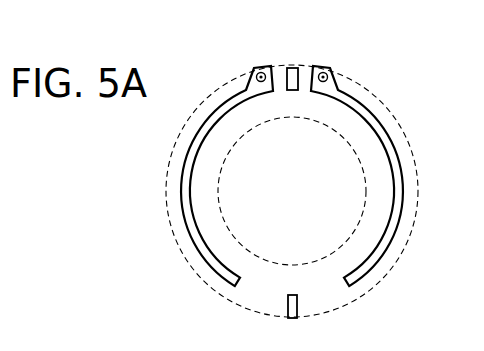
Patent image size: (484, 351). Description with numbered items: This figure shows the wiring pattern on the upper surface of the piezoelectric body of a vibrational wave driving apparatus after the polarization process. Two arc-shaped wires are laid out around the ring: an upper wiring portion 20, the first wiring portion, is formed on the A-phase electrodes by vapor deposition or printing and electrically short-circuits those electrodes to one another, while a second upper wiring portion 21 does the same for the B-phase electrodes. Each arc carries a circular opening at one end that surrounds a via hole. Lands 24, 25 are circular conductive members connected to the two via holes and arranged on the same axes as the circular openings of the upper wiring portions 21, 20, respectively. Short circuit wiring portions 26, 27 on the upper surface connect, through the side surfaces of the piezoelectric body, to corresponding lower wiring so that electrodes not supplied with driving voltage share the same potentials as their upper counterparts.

The upper wiring portion 20 is at (353, 98).
The upper wiring portion 21 is at (232, 98).
The land 24 is at (261, 72).
The land 25 is at (323, 72).
The short circuit wiring portion 26 is at (293, 68).
The short circuit wiring portion 27 is at (288, 302).